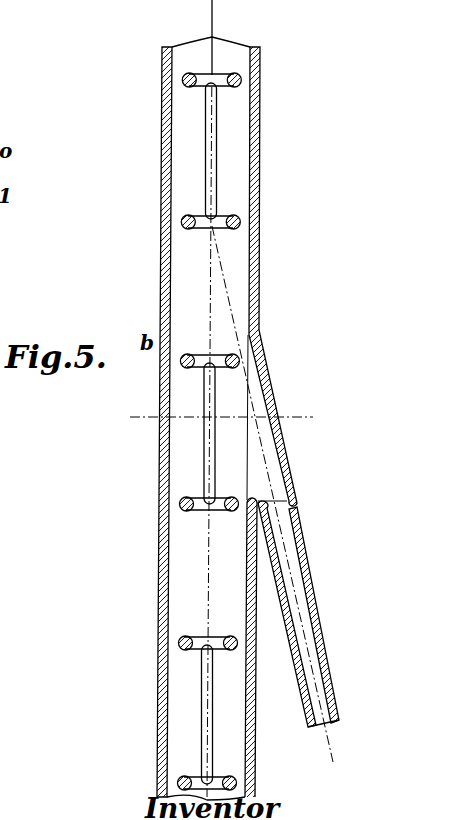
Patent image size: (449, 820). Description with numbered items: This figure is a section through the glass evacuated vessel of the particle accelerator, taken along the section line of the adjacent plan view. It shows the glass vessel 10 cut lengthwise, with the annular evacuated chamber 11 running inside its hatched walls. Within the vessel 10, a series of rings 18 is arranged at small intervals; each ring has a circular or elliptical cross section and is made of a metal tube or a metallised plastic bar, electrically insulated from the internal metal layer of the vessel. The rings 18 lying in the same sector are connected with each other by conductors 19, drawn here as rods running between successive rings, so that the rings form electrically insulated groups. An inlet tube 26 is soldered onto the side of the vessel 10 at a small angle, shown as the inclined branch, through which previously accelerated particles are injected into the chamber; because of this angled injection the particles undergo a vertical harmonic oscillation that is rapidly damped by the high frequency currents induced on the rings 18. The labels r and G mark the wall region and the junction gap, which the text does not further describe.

The glass vessel 10 is at (258, 181).
The annular evacuated chamber 11 is at (238, 194).
The rings 18 is at (225, 77).
The conductors 19 is at (217, 146).
The inlet tube 26 is at (308, 568).
The radius r is at (258, 220).
The gap G is at (316, 612).